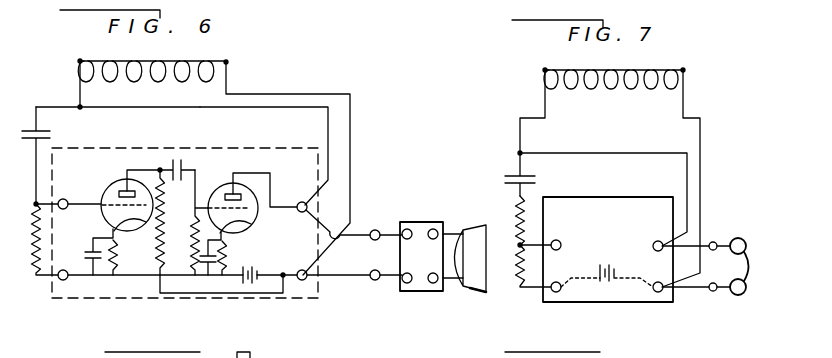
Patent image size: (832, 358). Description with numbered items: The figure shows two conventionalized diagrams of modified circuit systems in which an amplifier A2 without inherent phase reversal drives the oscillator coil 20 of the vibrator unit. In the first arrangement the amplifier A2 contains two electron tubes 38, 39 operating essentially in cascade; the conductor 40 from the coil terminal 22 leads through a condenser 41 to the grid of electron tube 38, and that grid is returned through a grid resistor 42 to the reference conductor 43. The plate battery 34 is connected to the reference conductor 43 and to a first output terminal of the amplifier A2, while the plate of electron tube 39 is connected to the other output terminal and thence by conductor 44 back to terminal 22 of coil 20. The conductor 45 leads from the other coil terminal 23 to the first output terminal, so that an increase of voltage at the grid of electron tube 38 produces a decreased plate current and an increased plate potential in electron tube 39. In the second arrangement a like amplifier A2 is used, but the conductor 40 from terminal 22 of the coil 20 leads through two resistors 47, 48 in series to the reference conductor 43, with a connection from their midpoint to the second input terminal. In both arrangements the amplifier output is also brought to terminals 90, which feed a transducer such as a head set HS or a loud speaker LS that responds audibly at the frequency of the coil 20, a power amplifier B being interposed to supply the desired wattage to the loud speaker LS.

In FIG. 6, the coil 20 is at (163, 86).
In FIG. 7, the coil 20 is at (628, 89).
In FIG. 6, the coil terminal 22 is at (75, 59).
In FIG. 7, the coil terminal 22 is at (543, 70).
In FIG. 6, the coil terminal 23 is at (230, 62).
In FIG. 7, the coil terminal 23 is at (686, 70).
In FIG. 6, the plate battery 34 is at (258, 268).
In FIG. 7, the plate battery 34 is at (614, 270).
In FIG. 6, the electron tube 38 is at (110, 192).
In FIG. 6, the electron tube 39 is at (259, 212).
In FIG. 6, the conductor 40 is at (43, 104).
In FIG. 7, the conductor 40 is at (518, 151).
In FIG. 6, the condenser 41 is at (45, 135).
In FIG. 6, the grid resistor 42 is at (38, 239).
In FIG. 6, the reference conductor 43 is at (137, 273).
In FIG. 7, the reference conductor 43 is at (590, 271).
In FIG. 6, the conductor 44 is at (277, 111).
In FIG. 6, the conductor 45 is at (313, 95).
In FIG. 7, the resistor 47 is at (517, 221).
In FIG. 7, the resistor 48 is at (517, 277).
In FIG. 6, the terminals 90 is at (354, 245).
In FIG. 7, the terminals 90 is at (696, 266).
In FIG. 6, the amplifier A2 is at (126, 306).
In FIG. 7, the amplifier A2 is at (610, 310).
In FIG. 6, the power amplifier B is at (437, 222).
In FIG. 6, the loud speaker LS is at (474, 292).
In FIG. 7, the head set HS is at (746, 231).